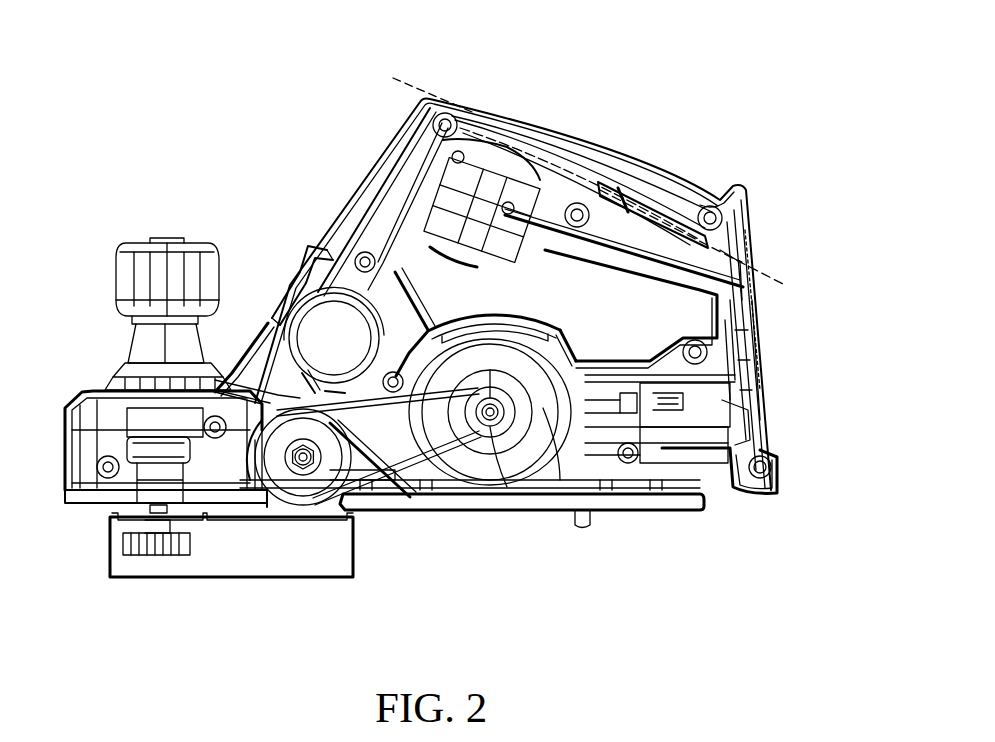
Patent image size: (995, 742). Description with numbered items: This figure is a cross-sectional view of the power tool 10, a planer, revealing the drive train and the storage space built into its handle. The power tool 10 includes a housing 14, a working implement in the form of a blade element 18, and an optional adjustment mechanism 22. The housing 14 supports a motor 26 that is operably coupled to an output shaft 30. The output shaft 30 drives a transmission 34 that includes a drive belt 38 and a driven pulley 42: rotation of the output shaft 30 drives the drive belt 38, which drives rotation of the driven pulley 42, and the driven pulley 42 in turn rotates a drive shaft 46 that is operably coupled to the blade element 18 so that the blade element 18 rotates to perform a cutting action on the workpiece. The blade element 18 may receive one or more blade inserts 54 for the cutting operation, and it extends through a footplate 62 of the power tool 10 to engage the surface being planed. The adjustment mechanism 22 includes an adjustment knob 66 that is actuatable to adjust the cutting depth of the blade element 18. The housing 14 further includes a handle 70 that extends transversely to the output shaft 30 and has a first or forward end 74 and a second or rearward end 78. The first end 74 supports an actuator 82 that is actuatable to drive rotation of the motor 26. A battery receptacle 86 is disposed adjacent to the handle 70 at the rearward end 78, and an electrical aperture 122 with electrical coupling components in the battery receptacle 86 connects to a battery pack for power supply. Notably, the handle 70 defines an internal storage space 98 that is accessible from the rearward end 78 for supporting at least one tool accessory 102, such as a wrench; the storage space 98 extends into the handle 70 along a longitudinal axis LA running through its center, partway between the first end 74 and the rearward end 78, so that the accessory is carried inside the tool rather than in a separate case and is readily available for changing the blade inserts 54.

The power tool 10 is at (150, 62).
The housing 14 is at (597, 392).
The blade element 18 is at (295, 480).
The adjustment mechanism 22 is at (90, 410).
The motor 26 is at (560, 470).
The output shaft 30 is at (505, 440).
The transmission 34 is at (380, 475).
The drive belt 38 is at (460, 470).
The driven pulley 42 is at (303, 470).
The drive shaft 46 is at (315, 470).
The blade insert 54 is at (250, 488).
The footplate 62 is at (668, 507).
The adjustment knob 66 is at (150, 300).
The handle 70 is at (585, 138).
The first end 74 is at (456, 100).
The second end 78 is at (727, 192).
The actuator 82 is at (437, 233).
The battery receptacle 86 is at (818, 332).
The storage space 98 is at (640, 178).
The tool accessory 102 is at (750, 212).
The electrical aperture 122 is at (772, 442).
The longitudinal axis LA is at (400, 90).